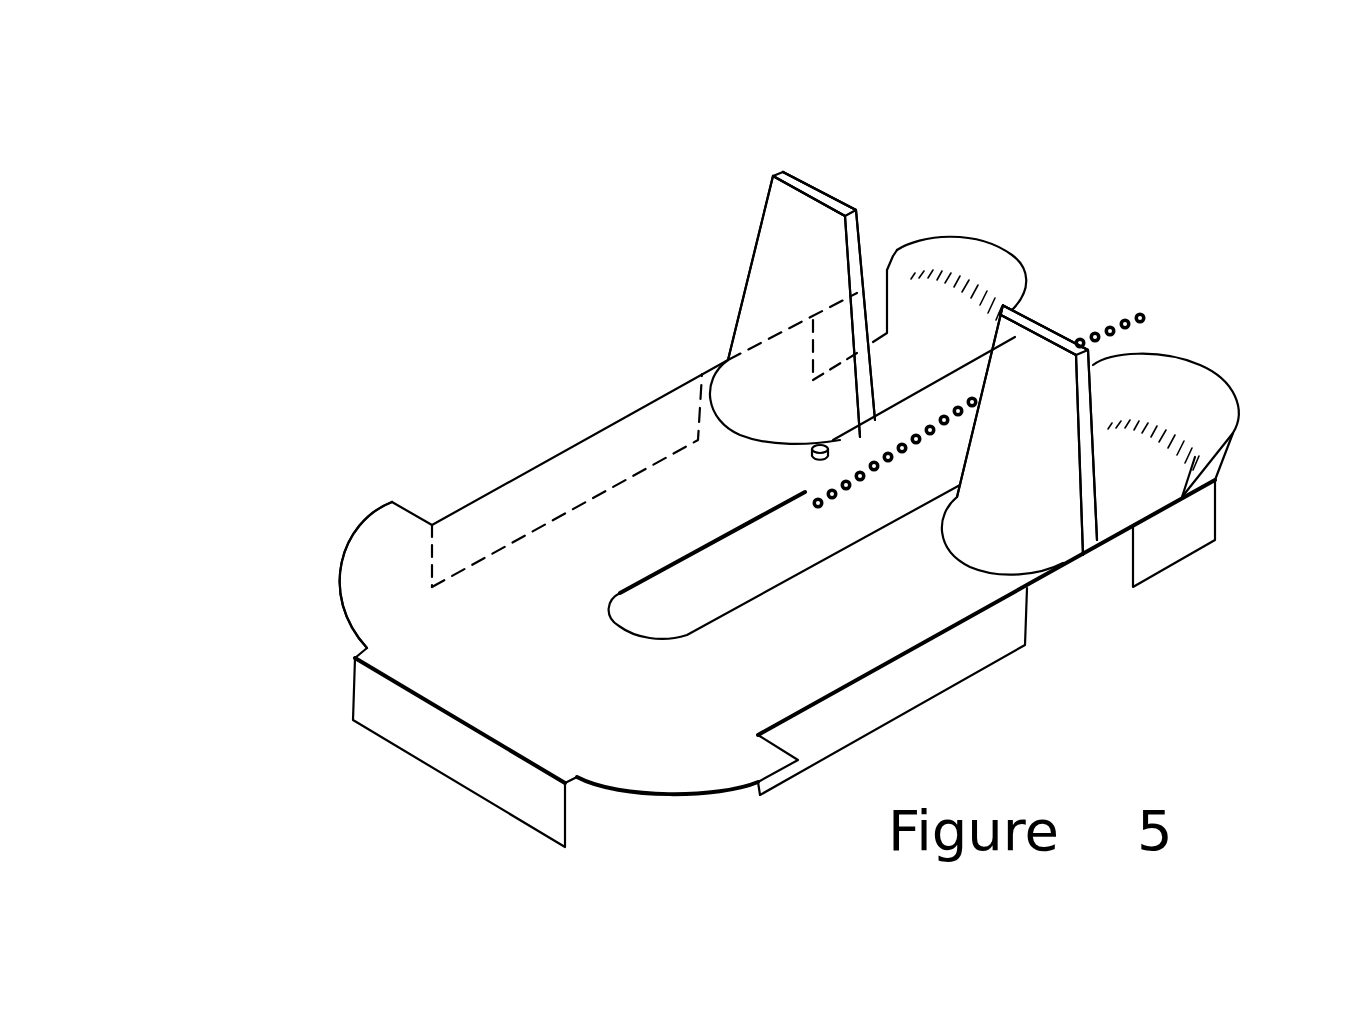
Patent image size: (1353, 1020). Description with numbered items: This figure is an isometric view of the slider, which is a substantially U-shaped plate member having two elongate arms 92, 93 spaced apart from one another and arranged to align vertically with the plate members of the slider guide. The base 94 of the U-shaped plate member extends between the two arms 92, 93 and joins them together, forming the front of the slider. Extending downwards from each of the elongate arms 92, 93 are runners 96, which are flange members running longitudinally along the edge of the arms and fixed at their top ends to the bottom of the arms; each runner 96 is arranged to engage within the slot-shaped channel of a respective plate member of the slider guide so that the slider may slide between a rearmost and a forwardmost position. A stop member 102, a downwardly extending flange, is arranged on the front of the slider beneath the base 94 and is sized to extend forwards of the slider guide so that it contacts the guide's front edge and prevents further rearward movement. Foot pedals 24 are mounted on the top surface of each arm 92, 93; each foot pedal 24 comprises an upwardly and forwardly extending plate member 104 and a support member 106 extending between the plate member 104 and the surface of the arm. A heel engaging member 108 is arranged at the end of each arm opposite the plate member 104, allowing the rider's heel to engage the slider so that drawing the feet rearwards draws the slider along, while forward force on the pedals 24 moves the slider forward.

The foot pedal 24 is at (833, 167).
The elongate arm 92 is at (786, 570).
The elongate arm 93 is at (877, 476).
The base 94 is at (323, 586).
The runner 96 is at (848, 560).
The stop member 102 is at (397, 749).
The plate member 104 is at (996, 248).
The support member 106 is at (899, 417).
The heel engaging member 108 is at (1116, 334).